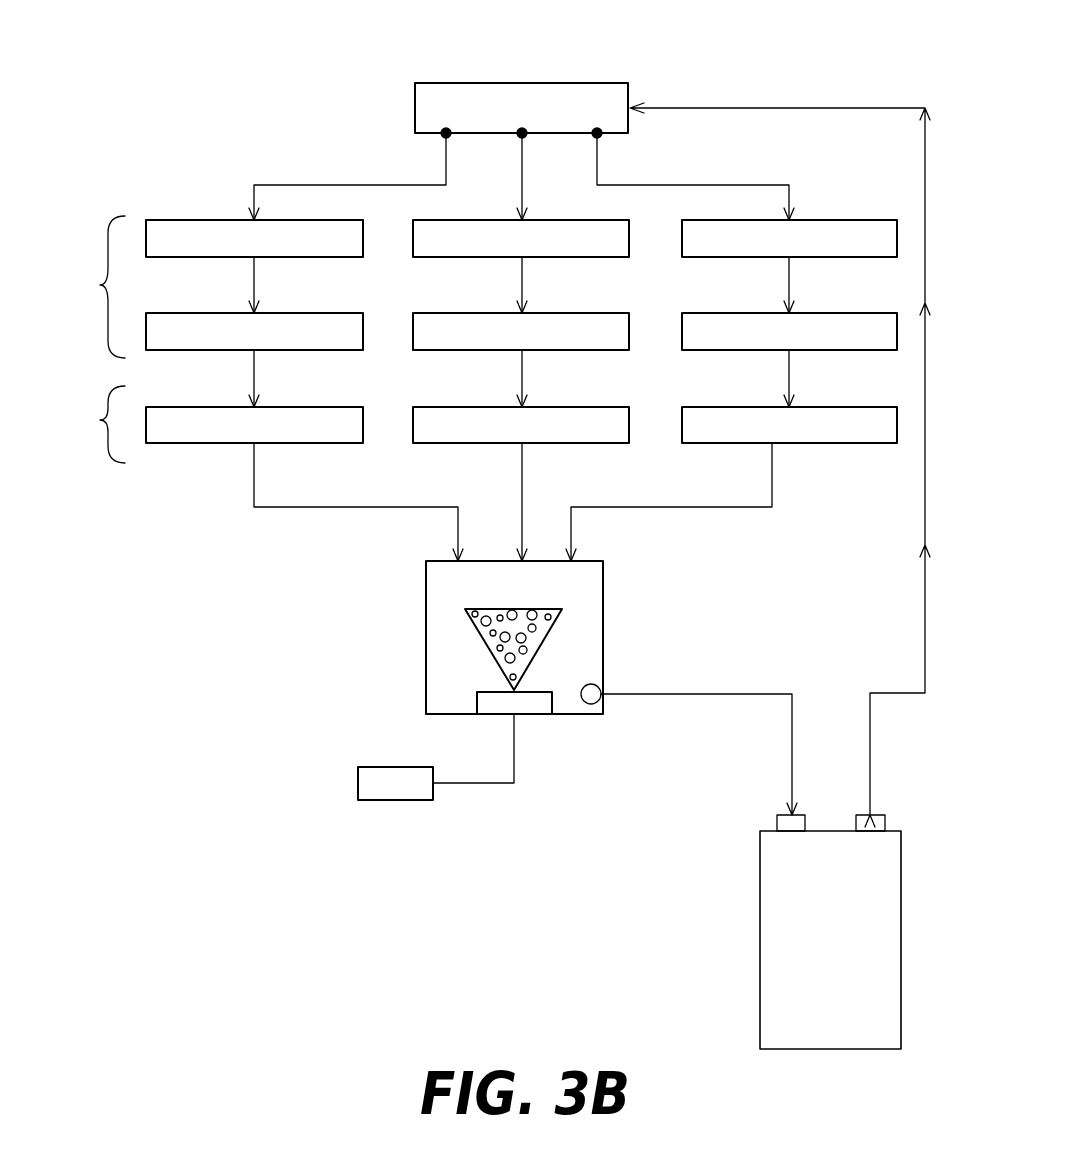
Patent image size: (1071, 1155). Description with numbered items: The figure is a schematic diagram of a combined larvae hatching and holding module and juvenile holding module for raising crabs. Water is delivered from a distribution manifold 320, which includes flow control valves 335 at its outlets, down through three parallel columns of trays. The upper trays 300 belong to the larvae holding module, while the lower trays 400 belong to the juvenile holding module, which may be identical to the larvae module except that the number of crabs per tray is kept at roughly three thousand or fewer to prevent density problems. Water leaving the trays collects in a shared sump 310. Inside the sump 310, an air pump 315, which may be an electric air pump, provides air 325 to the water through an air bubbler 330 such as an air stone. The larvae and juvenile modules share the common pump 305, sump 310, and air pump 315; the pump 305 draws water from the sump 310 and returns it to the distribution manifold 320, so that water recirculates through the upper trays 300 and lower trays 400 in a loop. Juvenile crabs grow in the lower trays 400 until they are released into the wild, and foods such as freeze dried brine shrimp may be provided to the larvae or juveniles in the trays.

The upper trays 300 is at (95, 285).
The pump 305 is at (760, 945).
The sump 310 is at (608, 584).
The air pump 315 is at (358, 780).
The distribution manifold 320 is at (543, 83).
The air 325 is at (500, 637).
The air bubbler 330 is at (548, 690).
The flow control valves 335 is at (444, 136).
The lower trays 400 is at (95, 420).